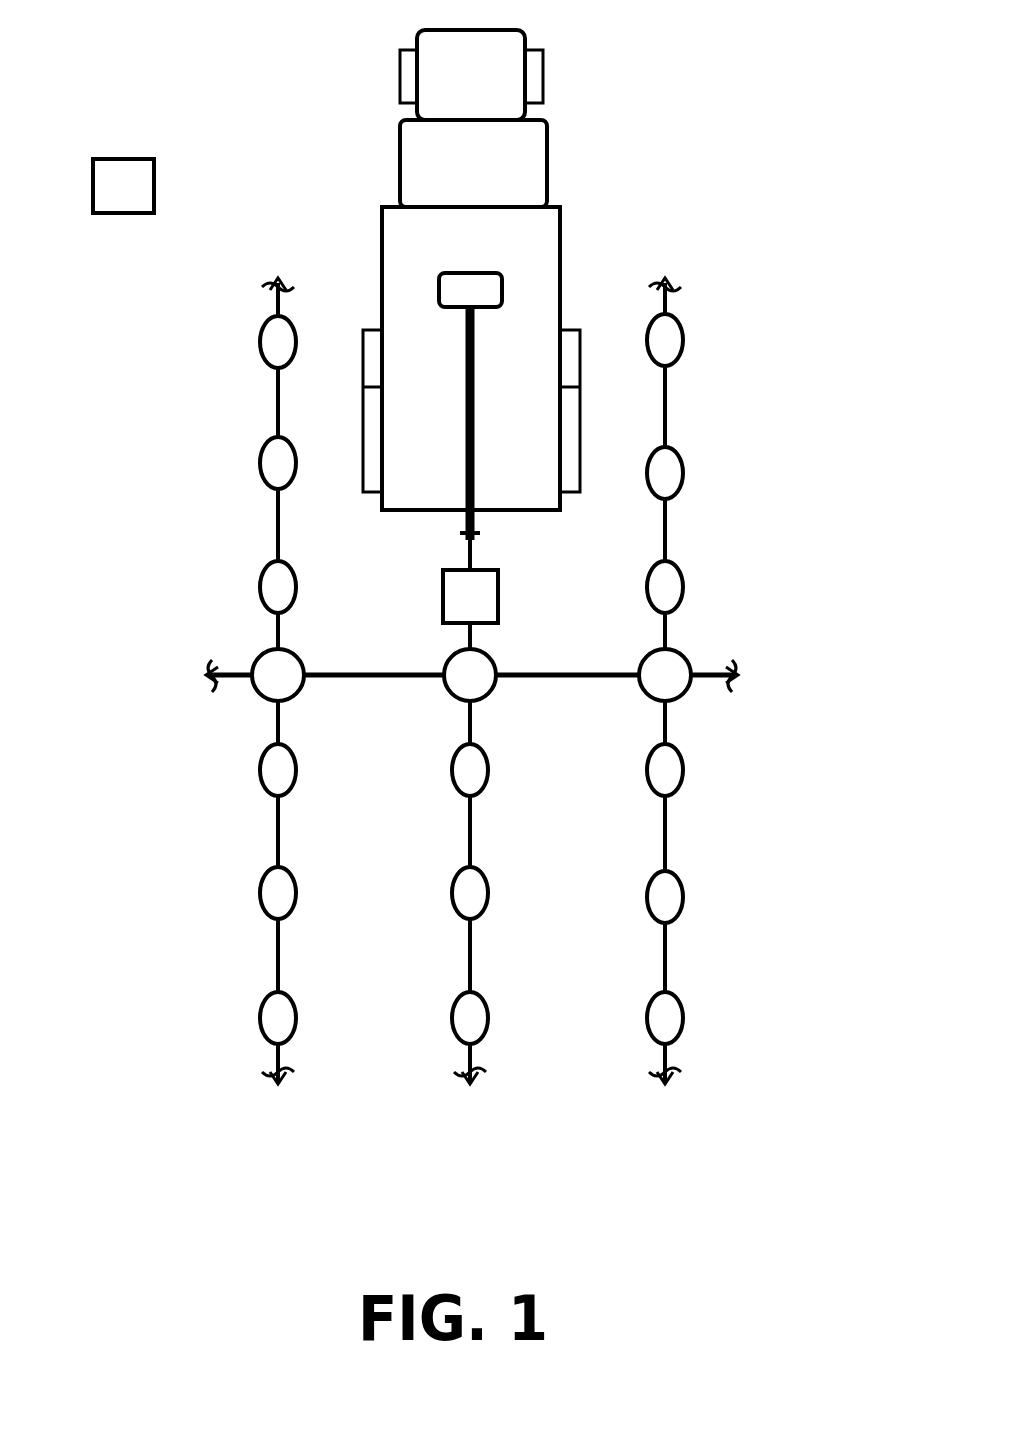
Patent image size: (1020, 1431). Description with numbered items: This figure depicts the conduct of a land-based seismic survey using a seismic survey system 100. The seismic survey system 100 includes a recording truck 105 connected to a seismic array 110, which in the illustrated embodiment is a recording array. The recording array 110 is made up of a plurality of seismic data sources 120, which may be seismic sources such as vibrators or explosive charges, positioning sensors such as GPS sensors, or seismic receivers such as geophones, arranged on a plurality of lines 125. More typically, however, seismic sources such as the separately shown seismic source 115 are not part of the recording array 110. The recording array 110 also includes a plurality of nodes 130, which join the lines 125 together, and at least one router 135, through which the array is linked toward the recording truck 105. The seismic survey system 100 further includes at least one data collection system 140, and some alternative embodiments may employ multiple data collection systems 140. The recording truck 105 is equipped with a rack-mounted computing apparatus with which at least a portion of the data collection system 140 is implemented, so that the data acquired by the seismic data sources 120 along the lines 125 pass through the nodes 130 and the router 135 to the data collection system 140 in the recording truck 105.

The seismic survey system 100 is at (272, 73).
The recording truck 105 is at (547, 160).
The seismic array 110 is at (395, 1182).
The seismic source 115 is at (155, 188).
The seismic data source 120 is at (260, 345).
The line 125 is at (245, 258).
The node 130 is at (253, 660).
The router 135 is at (443, 572).
The data collection system 140 is at (503, 290).